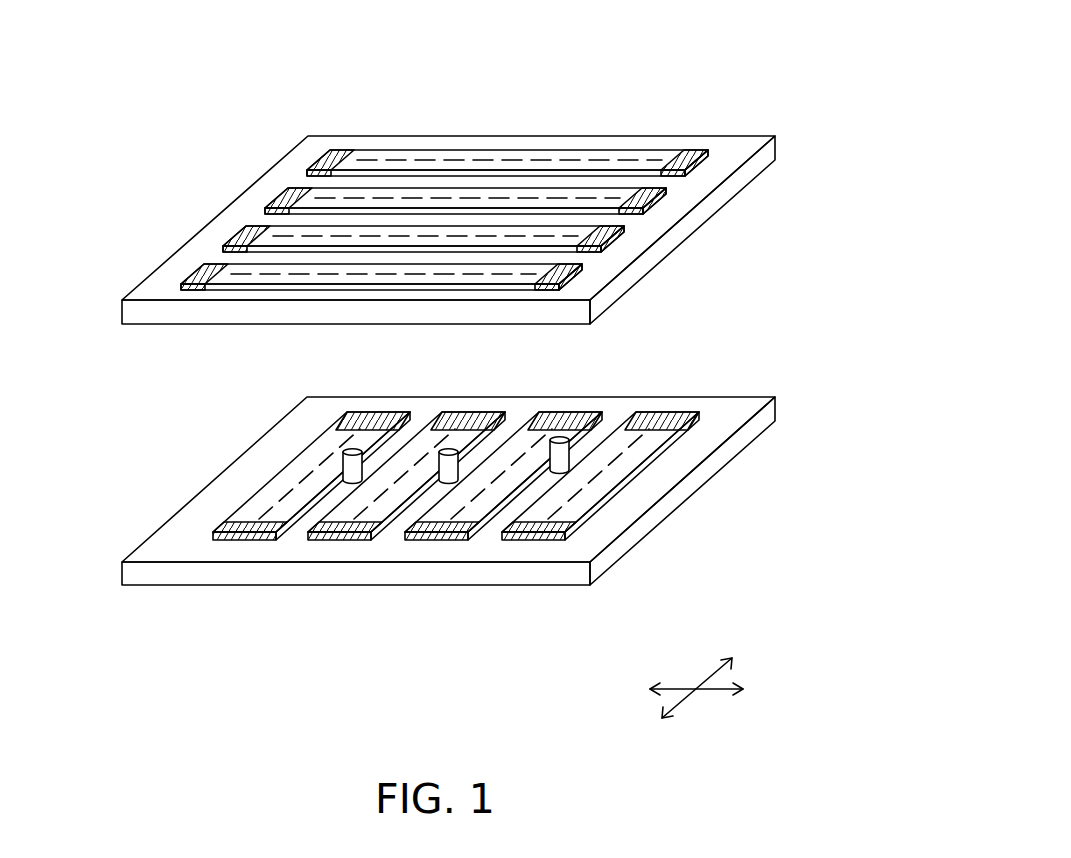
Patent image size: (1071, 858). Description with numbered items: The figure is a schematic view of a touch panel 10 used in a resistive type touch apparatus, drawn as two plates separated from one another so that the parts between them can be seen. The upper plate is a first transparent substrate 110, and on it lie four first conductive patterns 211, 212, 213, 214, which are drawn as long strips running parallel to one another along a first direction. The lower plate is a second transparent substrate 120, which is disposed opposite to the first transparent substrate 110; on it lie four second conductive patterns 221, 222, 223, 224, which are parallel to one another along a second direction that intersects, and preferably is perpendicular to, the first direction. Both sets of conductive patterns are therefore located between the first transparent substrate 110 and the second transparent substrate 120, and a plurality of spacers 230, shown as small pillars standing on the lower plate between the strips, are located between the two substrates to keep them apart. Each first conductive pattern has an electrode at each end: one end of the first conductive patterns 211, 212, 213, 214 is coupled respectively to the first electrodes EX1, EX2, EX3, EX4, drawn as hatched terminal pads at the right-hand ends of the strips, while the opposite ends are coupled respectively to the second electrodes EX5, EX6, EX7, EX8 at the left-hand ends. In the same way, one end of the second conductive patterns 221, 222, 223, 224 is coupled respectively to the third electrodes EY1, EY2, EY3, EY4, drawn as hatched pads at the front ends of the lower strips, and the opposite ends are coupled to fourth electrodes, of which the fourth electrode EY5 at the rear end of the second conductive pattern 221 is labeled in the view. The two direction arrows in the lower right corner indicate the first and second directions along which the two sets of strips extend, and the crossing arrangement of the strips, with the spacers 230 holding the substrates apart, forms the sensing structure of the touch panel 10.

The touch panel 10 is at (813, 33).
The first transparent substrate 110 is at (742, 137).
The second transparent substrate 120 is at (750, 396).
The first conductive pattern 211 is at (511, 141).
The first conductive pattern 212 is at (467, 159).
The first conductive pattern 213 is at (427, 178).
The first conductive pattern 214 is at (382, 197).
The second conductive pattern 221 is at (646, 494).
The second conductive pattern 222 is at (579, 529).
The second conductive pattern 223 is at (327, 529).
The second conductive pattern 224 is at (256, 529).
The spacer 230 is at (562, 462).
The first electrode EX1 is at (693, 165).
The first electrode EX2 is at (655, 203).
The first electrode EX3 is at (612, 241).
The first electrode EX4 is at (572, 280).
The second electrode EX5 is at (333, 160).
The second electrode EX6 is at (290, 198).
The second electrode EX7 is at (250, 236).
The second electrode EX8 is at (208, 274).
The third electrode EY1 is at (535, 541).
The third electrode EY2 is at (437, 541).
The third electrode EY3 is at (345, 541).
The third electrode EY4 is at (246, 541).
The fourth electrode EY5 is at (668, 413).